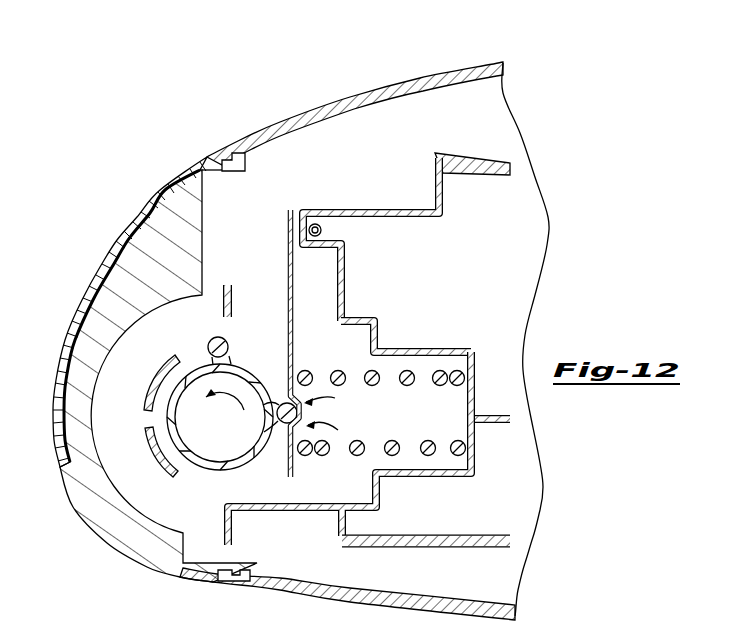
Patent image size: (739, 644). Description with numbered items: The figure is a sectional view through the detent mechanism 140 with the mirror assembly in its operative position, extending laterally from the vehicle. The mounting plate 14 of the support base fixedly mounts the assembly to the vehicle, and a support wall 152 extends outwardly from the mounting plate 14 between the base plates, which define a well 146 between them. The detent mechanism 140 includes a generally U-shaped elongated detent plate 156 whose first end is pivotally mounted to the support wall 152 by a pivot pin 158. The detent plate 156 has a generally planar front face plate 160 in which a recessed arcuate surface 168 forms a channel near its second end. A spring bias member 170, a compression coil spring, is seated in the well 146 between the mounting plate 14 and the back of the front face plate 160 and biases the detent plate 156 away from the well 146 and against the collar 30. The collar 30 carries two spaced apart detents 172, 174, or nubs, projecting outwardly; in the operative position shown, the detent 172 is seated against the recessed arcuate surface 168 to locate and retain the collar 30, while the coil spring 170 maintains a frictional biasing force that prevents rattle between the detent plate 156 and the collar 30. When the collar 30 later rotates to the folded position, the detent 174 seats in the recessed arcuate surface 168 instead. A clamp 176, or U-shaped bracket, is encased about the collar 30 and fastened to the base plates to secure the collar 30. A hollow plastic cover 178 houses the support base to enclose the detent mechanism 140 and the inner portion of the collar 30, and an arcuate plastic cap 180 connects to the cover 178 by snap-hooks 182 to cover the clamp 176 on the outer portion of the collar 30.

The mounting plate 14 is at (476, 388).
The collar 30 is at (200, 371).
The detent mechanism 140 is at (348, 178).
The well 146 is at (442, 423).
The support wall 152 is at (373, 210).
The detent plate 156 is at (288, 233).
The pivot pin 158 is at (321, 230).
The front face plate 160 is at (288, 286).
The recessed arcuate surface 168 is at (305, 410).
The spring bias member 170 is at (404, 356).
The detent 172 is at (280, 424).
The detent 174 is at (228, 349).
The clamp 176 is at (156, 457).
The cover 178 is at (355, 96).
The cap 180 is at (115, 240).
The snap-hooks 182 is at (246, 165).